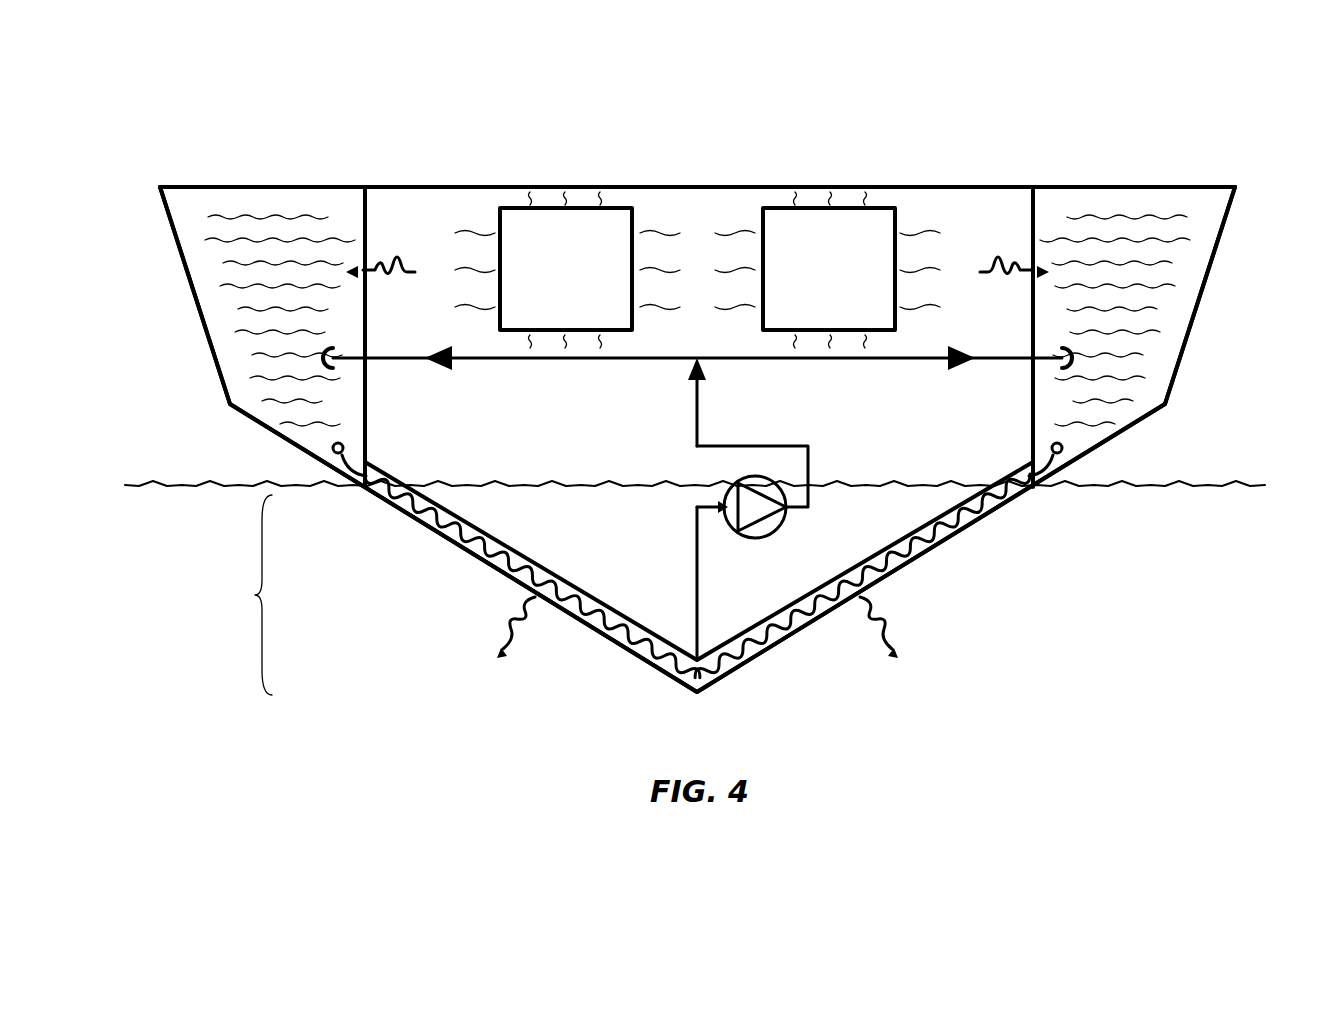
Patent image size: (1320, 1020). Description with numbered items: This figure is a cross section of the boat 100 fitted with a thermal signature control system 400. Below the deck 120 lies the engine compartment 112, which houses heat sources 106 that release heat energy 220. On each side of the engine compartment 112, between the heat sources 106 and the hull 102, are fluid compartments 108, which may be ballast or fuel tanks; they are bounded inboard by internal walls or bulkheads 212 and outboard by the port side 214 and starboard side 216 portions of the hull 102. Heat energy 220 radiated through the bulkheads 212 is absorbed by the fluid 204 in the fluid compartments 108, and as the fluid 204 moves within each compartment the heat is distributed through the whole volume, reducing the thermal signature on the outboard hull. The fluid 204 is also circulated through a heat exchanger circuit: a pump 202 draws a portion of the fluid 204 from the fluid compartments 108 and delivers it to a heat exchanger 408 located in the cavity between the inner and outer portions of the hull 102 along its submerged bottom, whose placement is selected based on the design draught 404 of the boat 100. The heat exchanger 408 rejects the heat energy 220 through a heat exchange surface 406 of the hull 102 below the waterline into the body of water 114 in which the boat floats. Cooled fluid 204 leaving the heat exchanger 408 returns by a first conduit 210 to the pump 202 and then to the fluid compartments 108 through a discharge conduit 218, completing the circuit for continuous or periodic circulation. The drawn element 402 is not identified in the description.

The boat 100 is at (570, 156).
The thermal signature control system 400 is at (865, 128).
The deck 120 is at (700, 187).
The fluid compartments 108 is at (198, 213).
The bulkheads 212 is at (367, 242).
The heat sources 106 is at (697, 269).
The heat energy 220 is at (468, 233).
The port side 214 is at (187, 290).
The starboard side 216 is at (1208, 285).
The fluid 204 is at (250, 341).
The engine compartment 112 is at (555, 455).
The body of water 114 is at (1138, 597).
The hull 102 is at (420, 532).
The heat exchanger 408 is at (652, 658).
The heat exchange coil 402 is at (475, 542).
The heat exchange surface 406 is at (393, 515).
The design draught 404 is at (248, 595).
The first conduit 210 is at (700, 608).
The discharge conduit 218 is at (810, 470).
The pump 202 is at (760, 540).